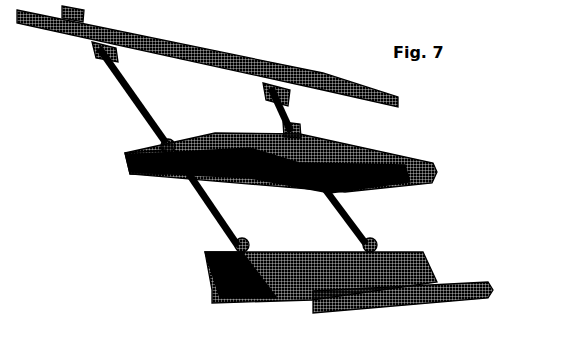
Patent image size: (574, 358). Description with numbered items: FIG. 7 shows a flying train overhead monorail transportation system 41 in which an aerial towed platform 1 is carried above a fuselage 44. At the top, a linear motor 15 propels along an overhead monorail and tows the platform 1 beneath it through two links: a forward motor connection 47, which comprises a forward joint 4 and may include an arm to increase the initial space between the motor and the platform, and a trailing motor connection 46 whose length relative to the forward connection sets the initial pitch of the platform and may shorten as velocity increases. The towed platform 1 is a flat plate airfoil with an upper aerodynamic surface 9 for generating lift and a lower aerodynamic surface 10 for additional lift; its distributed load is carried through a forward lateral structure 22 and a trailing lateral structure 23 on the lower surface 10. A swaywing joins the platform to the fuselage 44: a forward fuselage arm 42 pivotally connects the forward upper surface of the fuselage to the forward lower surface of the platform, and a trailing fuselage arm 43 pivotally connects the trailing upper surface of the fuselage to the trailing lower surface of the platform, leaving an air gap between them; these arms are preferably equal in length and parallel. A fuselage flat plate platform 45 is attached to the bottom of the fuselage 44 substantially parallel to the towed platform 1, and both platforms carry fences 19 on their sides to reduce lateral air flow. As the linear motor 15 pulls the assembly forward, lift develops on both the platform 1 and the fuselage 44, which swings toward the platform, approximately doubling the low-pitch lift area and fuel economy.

The aerial towed platform 1 is at (410, 142).
The forward joint 4 is at (163, 145).
The upper aerodynamic surface 9 is at (273, 252).
The lower aerodynamic surface 10 is at (378, 177).
The linear motor 15 is at (218, 33).
The fences 19 is at (387, 310).
The forward lateral structure 22 is at (163, 170).
The trailing lateral structure 23 is at (310, 178).
The transportation system 41 is at (188, 219).
The forward fuselage arm 42 is at (213, 205).
The trailing fuselage arm 43 is at (340, 203).
The fuselage 44 is at (436, 242).
The fuselage flat plate platform 45 is at (305, 303).
The trailing motor connection 46 is at (290, 117).
The forward motor connection 47 is at (133, 95).